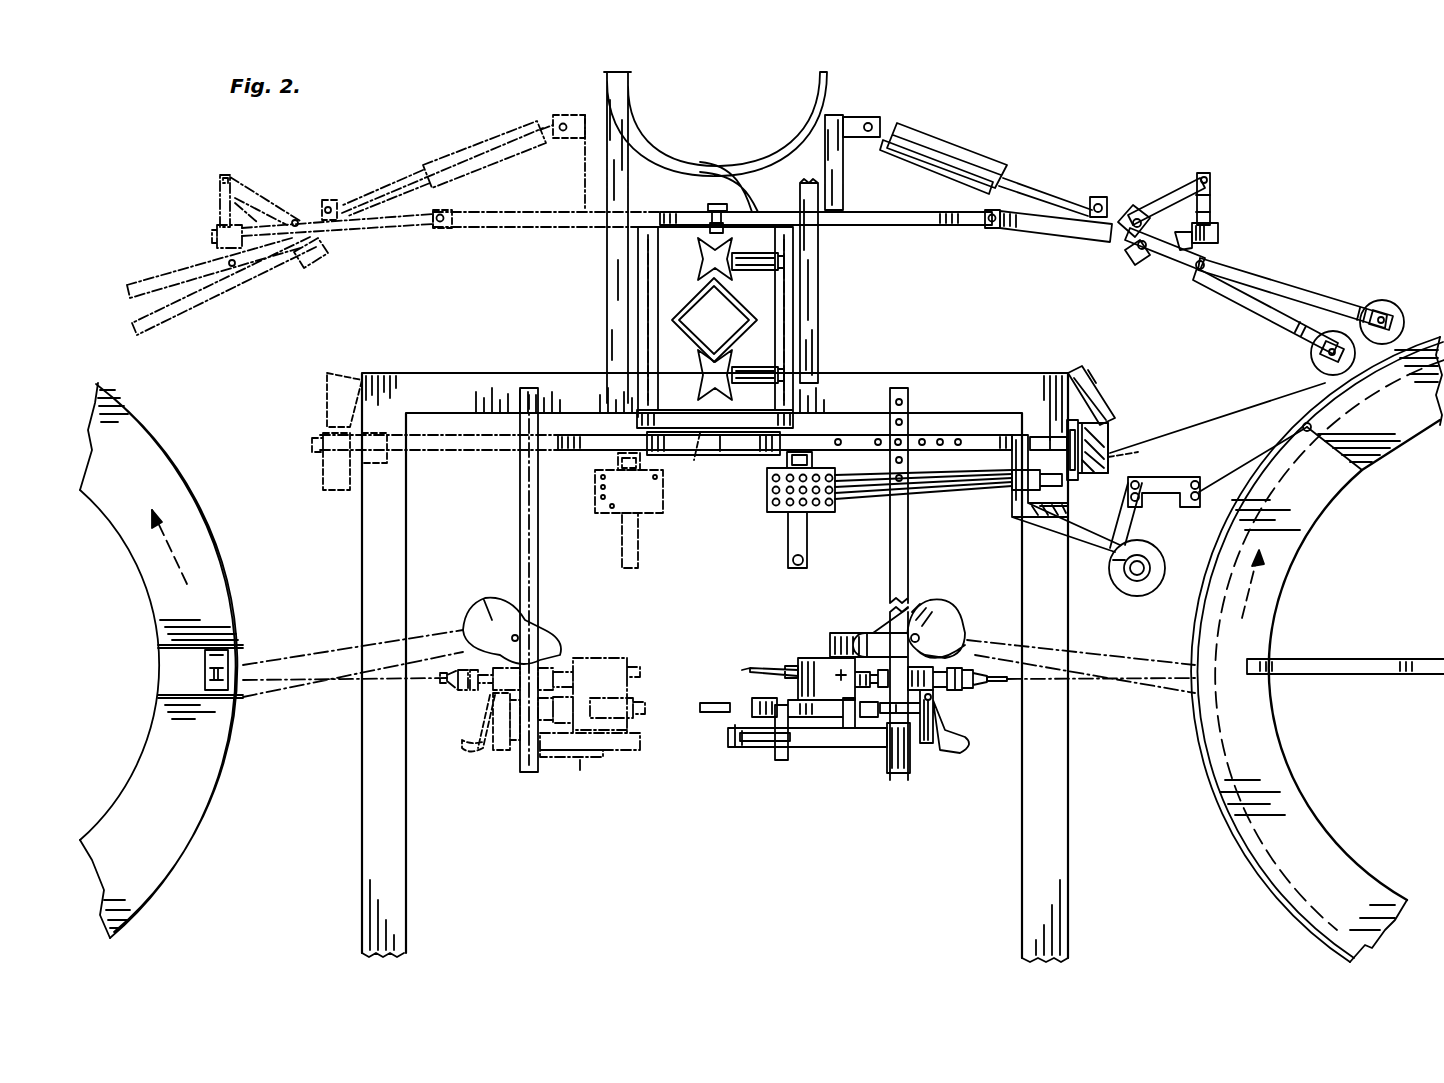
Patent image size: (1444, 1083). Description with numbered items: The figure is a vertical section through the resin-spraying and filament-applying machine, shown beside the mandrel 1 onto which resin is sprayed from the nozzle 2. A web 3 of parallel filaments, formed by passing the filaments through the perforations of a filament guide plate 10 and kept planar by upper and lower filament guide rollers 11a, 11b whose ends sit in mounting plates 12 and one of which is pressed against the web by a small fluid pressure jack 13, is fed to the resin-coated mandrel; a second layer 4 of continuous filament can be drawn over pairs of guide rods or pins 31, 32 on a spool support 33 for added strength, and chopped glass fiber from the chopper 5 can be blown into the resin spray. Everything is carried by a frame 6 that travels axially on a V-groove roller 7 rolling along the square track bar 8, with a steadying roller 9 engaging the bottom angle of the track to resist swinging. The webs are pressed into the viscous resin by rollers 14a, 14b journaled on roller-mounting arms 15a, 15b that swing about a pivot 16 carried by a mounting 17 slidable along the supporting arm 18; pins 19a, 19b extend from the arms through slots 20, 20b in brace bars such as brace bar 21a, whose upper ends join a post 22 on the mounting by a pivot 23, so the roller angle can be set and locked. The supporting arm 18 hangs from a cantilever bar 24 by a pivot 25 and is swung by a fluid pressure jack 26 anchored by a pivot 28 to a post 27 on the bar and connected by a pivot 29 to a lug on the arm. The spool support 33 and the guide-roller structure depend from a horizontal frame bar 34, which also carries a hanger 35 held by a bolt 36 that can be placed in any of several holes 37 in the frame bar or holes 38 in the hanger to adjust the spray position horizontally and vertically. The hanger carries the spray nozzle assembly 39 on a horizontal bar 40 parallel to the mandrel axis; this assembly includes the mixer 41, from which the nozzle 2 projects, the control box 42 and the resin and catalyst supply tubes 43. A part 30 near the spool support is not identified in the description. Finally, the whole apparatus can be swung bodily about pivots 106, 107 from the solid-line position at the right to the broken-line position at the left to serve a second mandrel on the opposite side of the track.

The mandrel 1 is at (1222, 838).
The nozzle 2 is at (980, 683).
The filament web 3 is at (774, 504).
The second layer of continuous filament 4 is at (1258, 455).
The chopper 5 is at (486, 608).
The frame 6 is at (362, 599).
The roller 7 is at (698, 260).
The track 8 is at (692, 300).
The steadying roller 9 is at (696, 365).
The filament guide plate 10 is at (648, 507).
The upper filament guide roller 11a is at (1062, 486).
The lower filament guide roller 11b is at (1122, 450).
The mounting plates 12 is at (1090, 424).
The fluid pressure jack 13 is at (1082, 380).
The roller 14a is at (1310, 356).
The roller 14b is at (1380, 300).
The roller-mounting arm 15a is at (1262, 317).
The roller-mounting arm 15b is at (1318, 282).
The pivot 16 is at (1195, 250).
The mounting 17 is at (1218, 232).
The supporting arm 18 is at (1050, 240).
The pin 19a is at (1138, 218).
The pin 19b is at (1144, 252).
The link 20 is at (1150, 210).
The slot 20b is at (1217, 204).
The brace bar 21a is at (1185, 185).
The post 22 is at (1212, 194).
The pivot 23 is at (1212, 177).
The cantilever bar 24 is at (905, 238).
The pivot 25 is at (988, 240).
The fluid pressure jack 26 is at (958, 148).
The post 27 is at (843, 180).
The pivot 28 is at (870, 118).
The pivot 29 is at (1099, 197).
The roller 30 is at (1127, 594).
The guide rods or pins 31 is at (1144, 500).
The guide rods or pins 32 is at (1196, 483).
The spool support 33 is at (1100, 518).
The horizontal frame bar 34 is at (976, 440).
The hanger 35 is at (538, 568).
The bolt 36 is at (904, 442).
The bolt-receiving holes 37 is at (860, 442).
The holes 38 is at (890, 416).
The spray nozzle assembly 39 is at (587, 770).
The horizontal bar 40 is at (910, 770).
The mixer 41 is at (941, 687).
The control box 42 is at (808, 658).
The supply tubes 43 is at (760, 652).
The pivot 106 is at (710, 202).
The pivot 107 is at (700, 462).